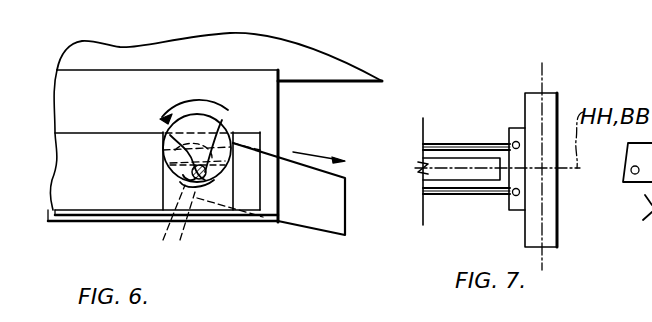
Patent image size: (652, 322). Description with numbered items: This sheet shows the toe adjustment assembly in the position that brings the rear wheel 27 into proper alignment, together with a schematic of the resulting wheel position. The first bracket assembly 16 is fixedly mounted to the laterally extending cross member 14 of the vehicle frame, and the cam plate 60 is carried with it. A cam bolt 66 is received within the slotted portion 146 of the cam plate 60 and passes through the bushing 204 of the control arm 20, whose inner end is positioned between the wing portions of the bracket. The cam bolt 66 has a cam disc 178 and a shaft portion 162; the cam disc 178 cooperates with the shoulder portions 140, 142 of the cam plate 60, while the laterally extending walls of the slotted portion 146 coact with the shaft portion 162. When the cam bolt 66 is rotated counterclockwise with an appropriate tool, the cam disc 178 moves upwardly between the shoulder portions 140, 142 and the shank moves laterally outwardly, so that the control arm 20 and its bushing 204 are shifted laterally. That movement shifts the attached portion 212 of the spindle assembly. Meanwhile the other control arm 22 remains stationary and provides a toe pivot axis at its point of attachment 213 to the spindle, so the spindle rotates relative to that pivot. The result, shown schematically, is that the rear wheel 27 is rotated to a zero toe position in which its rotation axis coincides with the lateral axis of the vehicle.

In FIG. 7, the cross member 14 is at (460, 151).
In FIG. 6, the first bracket assembly 16 is at (292, 106).
In FIG. 6, the control arm 20 is at (301, 226).
In FIG. 7, the control arm 20 is at (451, 195).
In FIG. 7, the control arm 22 is at (442, 142).
In FIG. 7, the rear wheel 27 is at (546, 92).
In FIG. 6, the cam plate 60 is at (79, 213).
In FIG. 6, the cam bolt 66 is at (197, 190).
In FIG. 6, the shoulder portion 140 is at (213, 153).
In FIG. 6, the shoulder portion 142 is at (175, 196).
In FIG. 6, the slotted portion 146 is at (165, 160).
In FIG. 6, the shaft portion 162 is at (175, 138).
In FIG. 6, the cam disc 178 is at (222, 120).
In FIG. 6, the bushing 204 is at (170, 210).
In FIG. 7, the attached portion of spindle assembly 212 is at (512, 196).
In FIG. 7, the point of attachment 213 is at (512, 128).